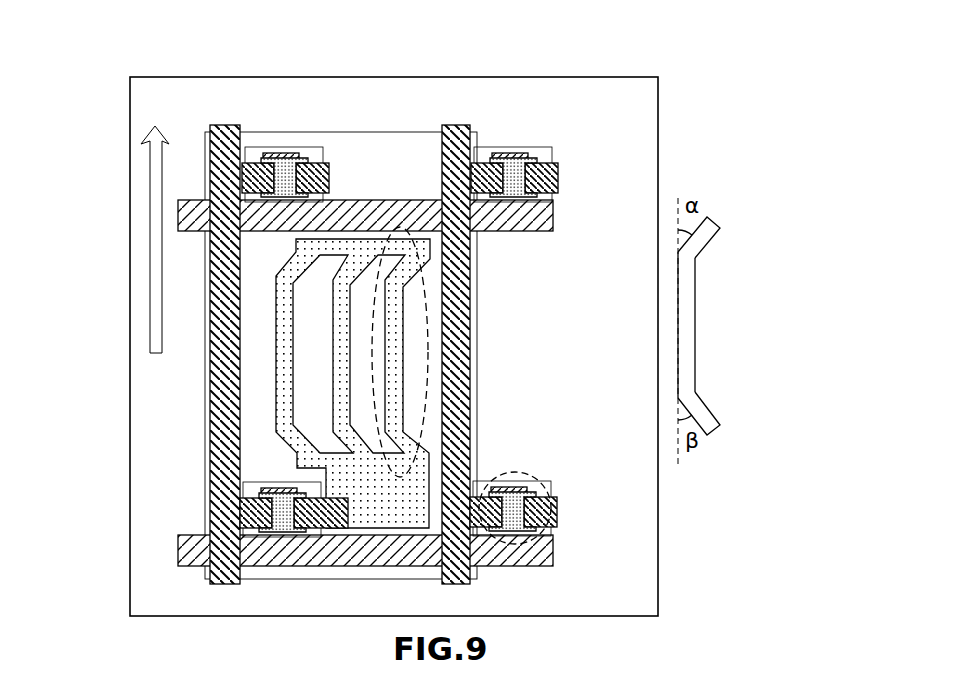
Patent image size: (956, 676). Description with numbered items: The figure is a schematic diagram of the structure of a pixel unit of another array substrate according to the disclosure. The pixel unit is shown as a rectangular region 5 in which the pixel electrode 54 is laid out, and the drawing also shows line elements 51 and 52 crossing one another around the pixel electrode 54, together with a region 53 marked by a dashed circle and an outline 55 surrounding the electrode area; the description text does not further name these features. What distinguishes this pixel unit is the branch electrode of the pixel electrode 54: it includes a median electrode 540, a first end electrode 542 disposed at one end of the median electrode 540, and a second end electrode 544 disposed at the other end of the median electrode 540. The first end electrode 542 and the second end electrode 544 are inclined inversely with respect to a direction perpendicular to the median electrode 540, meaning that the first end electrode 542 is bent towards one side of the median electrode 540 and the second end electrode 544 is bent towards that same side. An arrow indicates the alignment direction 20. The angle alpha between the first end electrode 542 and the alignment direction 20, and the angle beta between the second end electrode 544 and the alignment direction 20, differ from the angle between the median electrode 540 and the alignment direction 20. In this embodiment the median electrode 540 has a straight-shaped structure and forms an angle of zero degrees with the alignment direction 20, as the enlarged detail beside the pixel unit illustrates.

The pixel unit 5 is at (442, 90).
The alignment direction 20 is at (150, 173).
The data line 51 is at (458, 144).
The scan line 52 is at (537, 226).
The thin film transistor 53 is at (548, 488).
The pixel electrode 54 is at (430, 247).
The common electrode 55 is at (478, 337).
The median electrode 540 is at (405, 350).
The first end electrode 542 is at (413, 279).
The second end electrode 544 is at (405, 432).